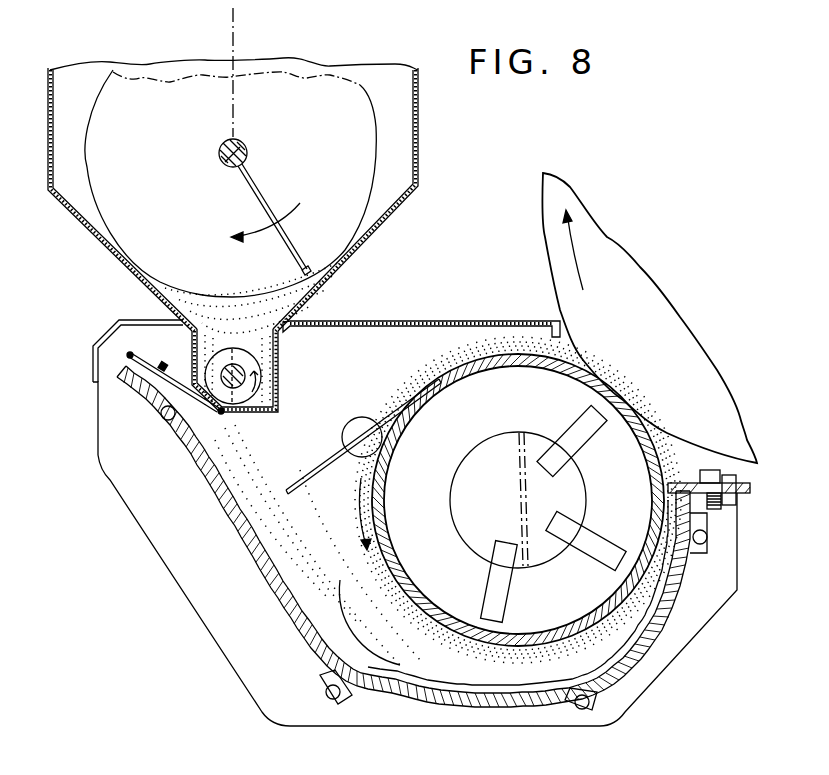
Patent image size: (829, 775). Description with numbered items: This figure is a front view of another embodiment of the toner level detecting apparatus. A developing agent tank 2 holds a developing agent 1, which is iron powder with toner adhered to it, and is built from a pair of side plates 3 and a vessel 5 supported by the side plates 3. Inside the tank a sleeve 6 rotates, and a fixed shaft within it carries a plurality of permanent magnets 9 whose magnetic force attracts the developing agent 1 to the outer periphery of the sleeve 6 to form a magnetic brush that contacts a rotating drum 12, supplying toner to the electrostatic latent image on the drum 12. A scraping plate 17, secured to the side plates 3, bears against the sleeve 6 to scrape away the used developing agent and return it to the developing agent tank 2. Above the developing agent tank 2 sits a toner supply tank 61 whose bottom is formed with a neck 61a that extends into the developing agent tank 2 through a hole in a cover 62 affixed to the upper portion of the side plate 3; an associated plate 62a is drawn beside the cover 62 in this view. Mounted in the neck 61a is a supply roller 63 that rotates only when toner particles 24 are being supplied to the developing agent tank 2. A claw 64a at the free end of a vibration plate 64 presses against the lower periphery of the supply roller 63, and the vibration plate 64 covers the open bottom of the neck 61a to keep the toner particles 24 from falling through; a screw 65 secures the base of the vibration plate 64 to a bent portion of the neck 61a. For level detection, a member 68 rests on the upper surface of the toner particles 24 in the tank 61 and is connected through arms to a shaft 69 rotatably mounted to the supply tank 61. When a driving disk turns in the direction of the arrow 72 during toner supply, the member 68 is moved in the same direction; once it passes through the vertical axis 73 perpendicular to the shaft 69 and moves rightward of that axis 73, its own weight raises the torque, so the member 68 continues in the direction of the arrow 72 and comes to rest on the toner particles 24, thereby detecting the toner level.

The developing agent 1 is at (312, 658).
The developing agent tank 2 is at (427, 361).
The side plate 3 is at (100, 426).
The vessel 5 is at (277, 595).
The sleeve 6 is at (572, 617).
The permanent magnets 9 is at (586, 532).
The drum 12 is at (546, 237).
The scraping plate 17 is at (392, 405).
The toner particles 24 is at (208, 287).
The toner supply tank 61 is at (421, 150).
The neck 61a is at (279, 348).
The cover 62 is at (412, 322).
The blade plate 62a is at (128, 354).
The supply roller 63 is at (270, 378).
The vibration plate 64 is at (165, 437).
The claw 64a is at (226, 415).
The screw 65 is at (168, 343).
The toner level detecting member 68 is at (305, 268).
The shaft 69 is at (247, 152).
The arrow 72 is at (290, 212).
The vertical axis 73 is at (236, 34).